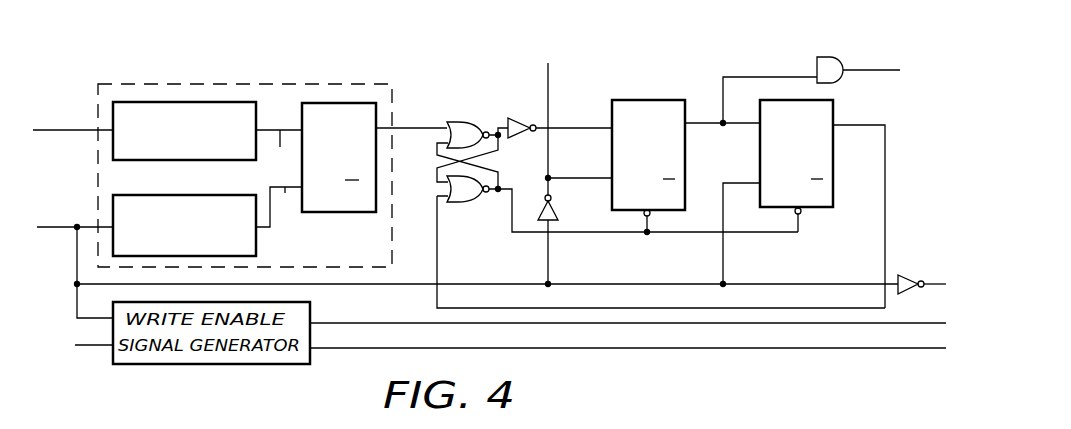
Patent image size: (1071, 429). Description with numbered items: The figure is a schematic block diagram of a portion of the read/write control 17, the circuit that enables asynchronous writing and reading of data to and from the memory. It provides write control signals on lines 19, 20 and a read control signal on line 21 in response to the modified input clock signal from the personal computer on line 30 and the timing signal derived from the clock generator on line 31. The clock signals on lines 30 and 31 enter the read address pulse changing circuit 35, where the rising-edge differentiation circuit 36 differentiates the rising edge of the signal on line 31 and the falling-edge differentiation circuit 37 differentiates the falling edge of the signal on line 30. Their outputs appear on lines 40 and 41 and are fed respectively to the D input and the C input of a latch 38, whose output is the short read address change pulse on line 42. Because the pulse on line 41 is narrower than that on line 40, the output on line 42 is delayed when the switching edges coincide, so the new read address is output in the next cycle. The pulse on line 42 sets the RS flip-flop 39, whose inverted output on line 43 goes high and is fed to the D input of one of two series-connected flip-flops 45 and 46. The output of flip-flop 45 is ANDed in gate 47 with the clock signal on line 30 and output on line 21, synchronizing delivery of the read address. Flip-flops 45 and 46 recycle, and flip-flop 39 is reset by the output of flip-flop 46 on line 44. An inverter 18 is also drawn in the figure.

The read/write control 17 is at (474, 90).
The inverter 18 is at (930, 284).
The line 19 is at (941, 323).
The line 20 is at (918, 338).
The line 21 is at (870, 70).
The line 30 is at (62, 227).
The line 31 is at (75, 130).
The read address pulse changing circuit 35 is at (231, 84).
The rising-edge differentiation circuit 36 is at (218, 161).
The falling-edge differentiation circuit 37 is at (258, 249).
The latch 38 is at (300, 108).
The RS flip-flop 39 is at (478, 123).
The line 40 is at (279, 151).
The line 41 is at (279, 207).
The line 42 is at (423, 121).
The line 43 is at (580, 121).
The line 44 is at (863, 125).
The flip-flop 45 is at (668, 100).
The flip-flop 46 is at (757, 113).
The gate 47 is at (825, 58).